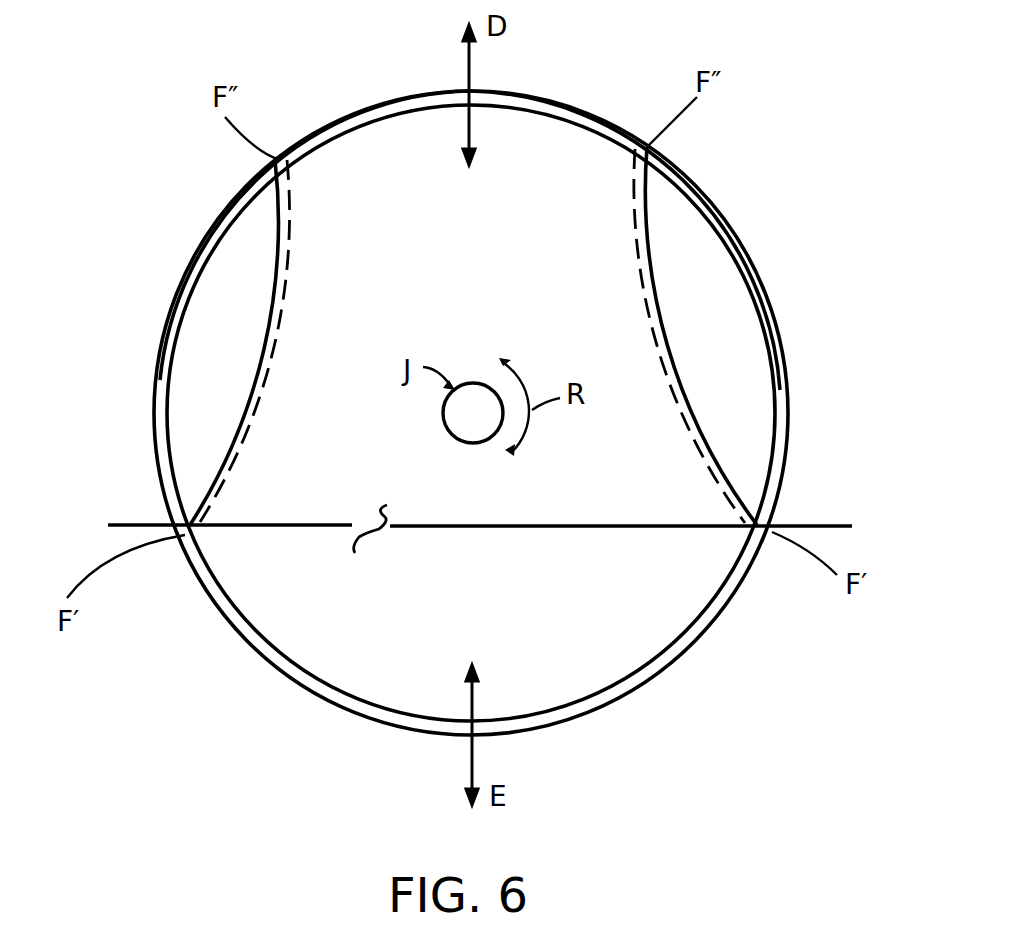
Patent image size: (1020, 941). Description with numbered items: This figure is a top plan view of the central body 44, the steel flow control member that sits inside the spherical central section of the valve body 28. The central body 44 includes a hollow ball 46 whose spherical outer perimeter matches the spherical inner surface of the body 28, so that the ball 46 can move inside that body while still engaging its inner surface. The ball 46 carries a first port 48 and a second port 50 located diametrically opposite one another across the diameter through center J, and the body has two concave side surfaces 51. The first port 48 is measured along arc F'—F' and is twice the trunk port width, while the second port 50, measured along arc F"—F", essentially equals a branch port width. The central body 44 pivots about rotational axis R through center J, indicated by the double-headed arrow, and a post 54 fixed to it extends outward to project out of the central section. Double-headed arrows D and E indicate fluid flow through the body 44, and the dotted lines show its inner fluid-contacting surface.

The body 28 is at (230, 203).
The central body 44 is at (354, 524).
The hollow ball 46 is at (262, 645).
The first port 48 is at (317, 678).
The second port 50 is at (573, 120).
The concave side surfaces 51 is at (233, 438).
The post 54 is at (471, 426).